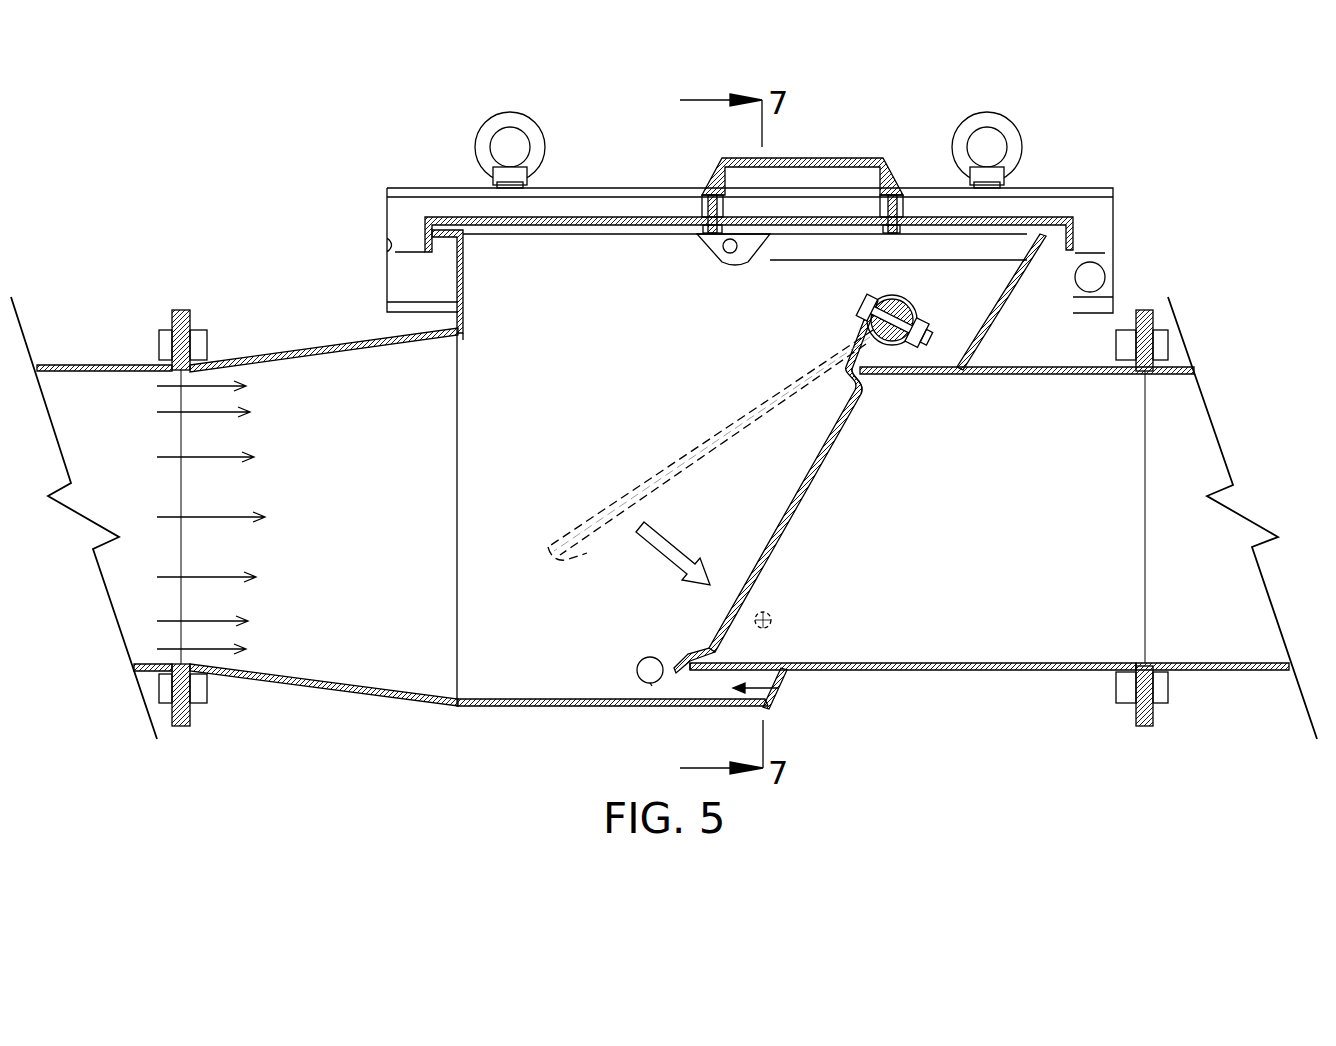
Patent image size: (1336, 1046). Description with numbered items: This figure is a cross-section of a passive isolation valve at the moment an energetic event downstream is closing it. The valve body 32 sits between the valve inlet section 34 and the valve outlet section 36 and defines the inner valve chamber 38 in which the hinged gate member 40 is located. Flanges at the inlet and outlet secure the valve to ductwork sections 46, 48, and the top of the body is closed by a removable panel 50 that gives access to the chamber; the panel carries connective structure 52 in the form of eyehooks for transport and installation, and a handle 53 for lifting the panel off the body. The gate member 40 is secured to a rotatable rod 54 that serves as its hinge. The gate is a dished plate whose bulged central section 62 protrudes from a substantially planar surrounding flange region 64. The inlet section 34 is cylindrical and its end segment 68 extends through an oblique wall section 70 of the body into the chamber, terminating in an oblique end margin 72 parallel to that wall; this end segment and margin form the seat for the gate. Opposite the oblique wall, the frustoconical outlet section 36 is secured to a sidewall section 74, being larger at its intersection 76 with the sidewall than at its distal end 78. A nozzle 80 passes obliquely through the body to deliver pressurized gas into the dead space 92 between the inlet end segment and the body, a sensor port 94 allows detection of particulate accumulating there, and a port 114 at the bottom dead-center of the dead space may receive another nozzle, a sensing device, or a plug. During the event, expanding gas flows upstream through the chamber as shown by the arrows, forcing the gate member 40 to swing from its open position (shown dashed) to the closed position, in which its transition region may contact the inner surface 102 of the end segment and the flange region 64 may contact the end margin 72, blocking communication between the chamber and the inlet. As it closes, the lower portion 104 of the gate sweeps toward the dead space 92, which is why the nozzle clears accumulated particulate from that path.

The valve body 32 is at (550, 708).
The valve inlet section 34 is at (974, 672).
The valve outlet section 36 is at (310, 690).
The inner valve chamber 38 is at (610, 292).
The gate member 40 is at (703, 621).
The ductwork section 46 is at (1222, 672).
The ductwork section 48 is at (84, 364).
The removable panel 50 is at (550, 226).
The connective structure 52 is at (503, 118).
The handle 53 is at (823, 158).
The rotatable rod 54 is at (905, 305).
The central section 62 is at (799, 509).
The flange region 64 is at (850, 328).
The end segment 68 is at (727, 670).
The oblique wall section 70 is at (995, 318).
The oblique end margin 72 is at (680, 675).
The sidewall section 74 is at (465, 278).
The intersection 76 is at (462, 338).
The distal end 78 is at (222, 362).
The nozzle 80 is at (790, 608).
The dead space 92 is at (777, 693).
The sensor port 94 is at (642, 681).
The inner surface 102 is at (868, 383).
The lower portion 104 is at (668, 664).
The port 114 is at (778, 688).